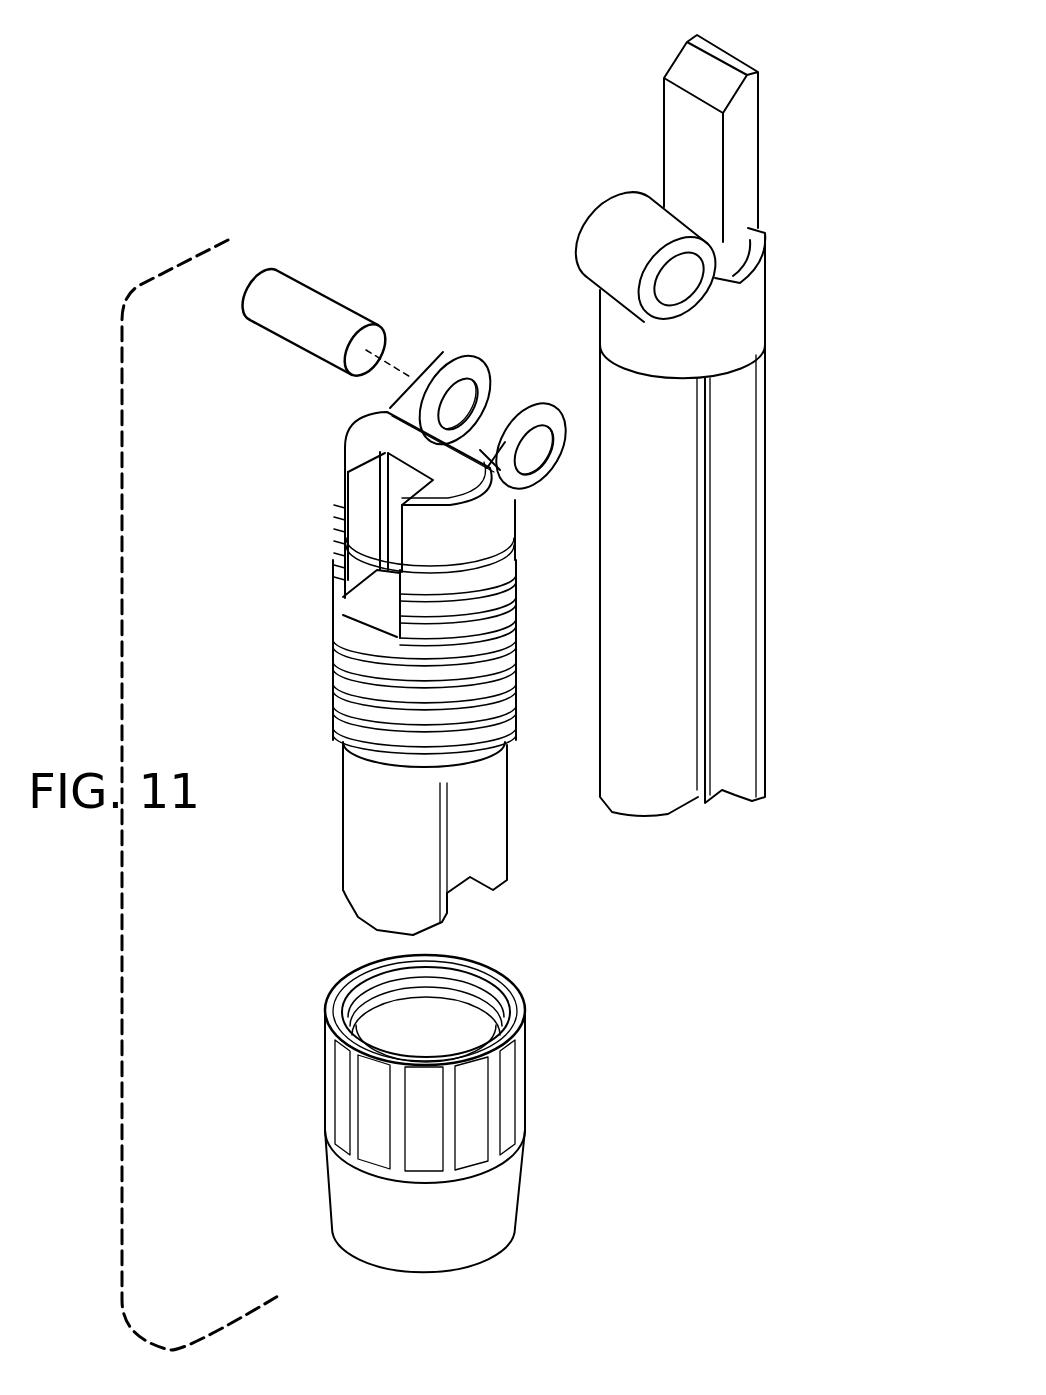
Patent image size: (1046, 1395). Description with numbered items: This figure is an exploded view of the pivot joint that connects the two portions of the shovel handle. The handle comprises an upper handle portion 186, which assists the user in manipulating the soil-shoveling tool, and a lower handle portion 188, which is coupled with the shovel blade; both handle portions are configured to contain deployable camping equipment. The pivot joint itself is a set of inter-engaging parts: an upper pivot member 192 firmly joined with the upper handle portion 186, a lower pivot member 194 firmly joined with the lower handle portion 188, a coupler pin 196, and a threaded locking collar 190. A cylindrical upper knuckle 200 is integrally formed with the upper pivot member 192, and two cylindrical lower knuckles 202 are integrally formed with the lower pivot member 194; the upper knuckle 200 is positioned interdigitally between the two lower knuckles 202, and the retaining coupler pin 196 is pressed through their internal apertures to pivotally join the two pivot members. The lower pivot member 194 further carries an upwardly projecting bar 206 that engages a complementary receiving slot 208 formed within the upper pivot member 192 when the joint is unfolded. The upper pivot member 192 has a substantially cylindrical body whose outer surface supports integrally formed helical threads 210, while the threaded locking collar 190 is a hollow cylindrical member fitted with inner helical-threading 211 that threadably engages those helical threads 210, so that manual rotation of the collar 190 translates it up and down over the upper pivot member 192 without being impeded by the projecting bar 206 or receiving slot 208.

The upper handle portion 186 is at (348, 852).
The lower handle portion 188 is at (762, 458).
The threaded locking collar 190 is at (345, 1138).
The upper pivot member 192 is at (292, 633).
The lower pivot member 194 is at (808, 302).
The coupler pin 196 is at (318, 300).
The upper knuckle 200 is at (648, 212).
The lower knuckles 202 is at (513, 376).
The projecting bar 206 is at (733, 50).
The receiving slot 208 is at (360, 510).
The helical threads 210 is at (345, 705).
The inner helical-threading 211 is at (470, 985).